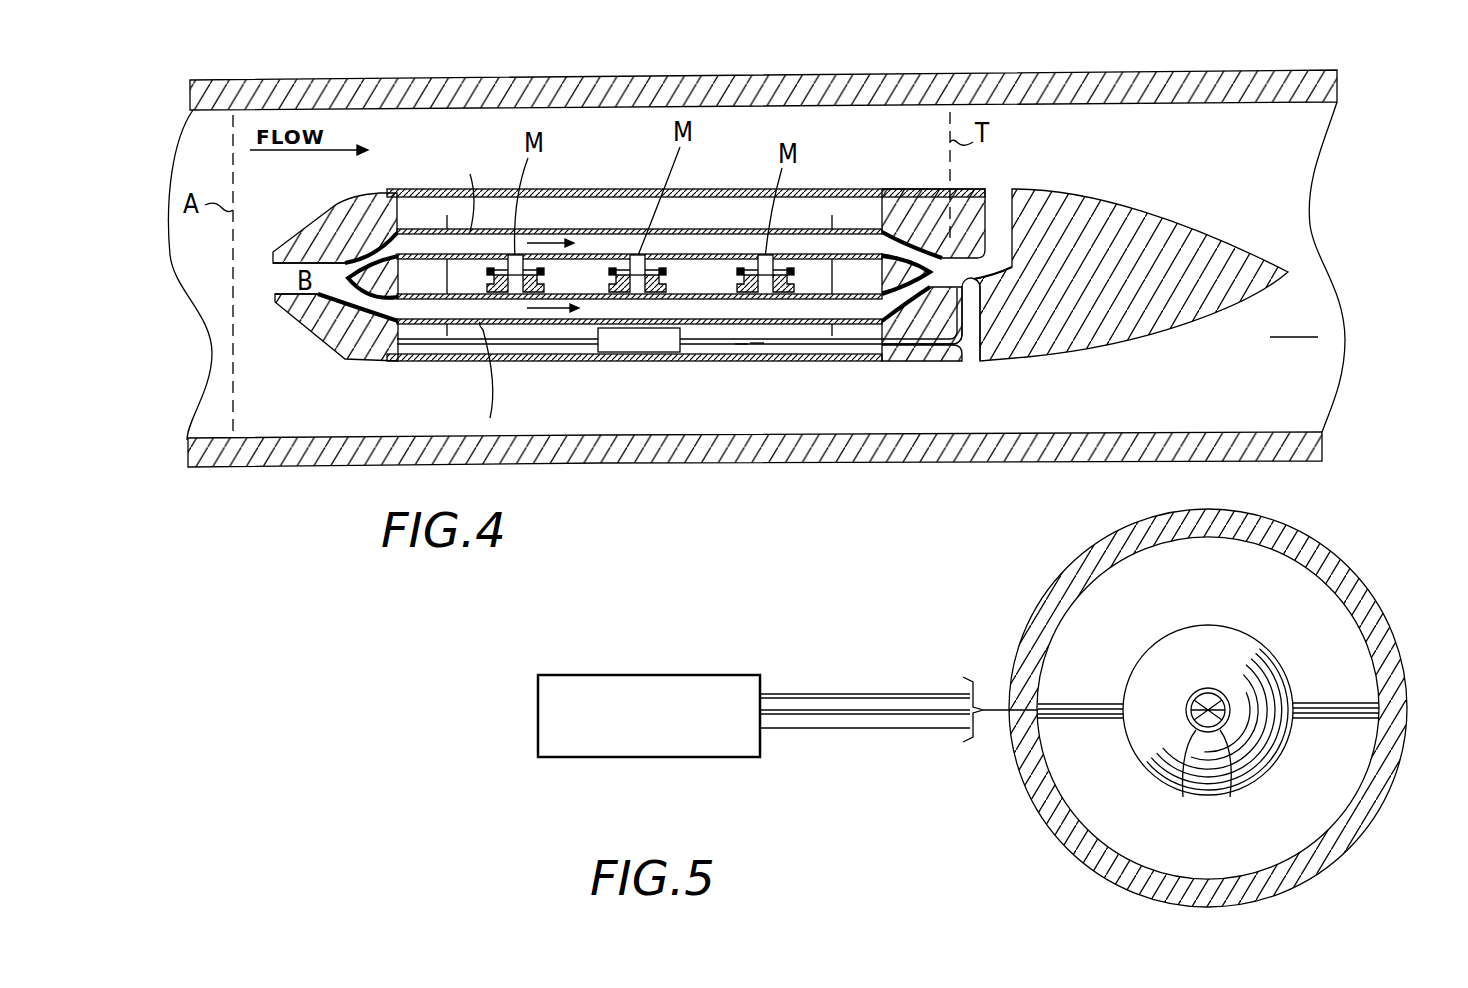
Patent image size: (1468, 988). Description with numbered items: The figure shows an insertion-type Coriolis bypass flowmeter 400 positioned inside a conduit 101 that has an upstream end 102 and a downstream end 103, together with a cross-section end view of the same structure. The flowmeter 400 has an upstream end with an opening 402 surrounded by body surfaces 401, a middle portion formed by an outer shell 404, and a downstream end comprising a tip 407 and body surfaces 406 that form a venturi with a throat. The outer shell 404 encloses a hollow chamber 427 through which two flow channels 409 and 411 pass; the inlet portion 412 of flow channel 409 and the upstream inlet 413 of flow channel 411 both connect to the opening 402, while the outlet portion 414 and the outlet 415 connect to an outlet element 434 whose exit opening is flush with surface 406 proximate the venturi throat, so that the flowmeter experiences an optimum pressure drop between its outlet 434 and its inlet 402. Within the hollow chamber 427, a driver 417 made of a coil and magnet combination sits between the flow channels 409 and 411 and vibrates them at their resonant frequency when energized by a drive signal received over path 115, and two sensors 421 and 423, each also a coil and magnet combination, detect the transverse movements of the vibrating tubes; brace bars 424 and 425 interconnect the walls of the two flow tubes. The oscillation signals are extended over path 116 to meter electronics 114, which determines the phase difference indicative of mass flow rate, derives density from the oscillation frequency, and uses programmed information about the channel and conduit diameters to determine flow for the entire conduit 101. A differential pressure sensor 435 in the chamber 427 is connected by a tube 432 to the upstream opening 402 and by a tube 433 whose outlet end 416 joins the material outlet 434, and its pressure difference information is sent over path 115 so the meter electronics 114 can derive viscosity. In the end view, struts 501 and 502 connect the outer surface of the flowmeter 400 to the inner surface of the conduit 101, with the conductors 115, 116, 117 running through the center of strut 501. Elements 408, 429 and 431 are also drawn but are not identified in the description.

In FIG. 4, the conduit 101 is at (687, 466).
In FIG. 5, the conduit 101 is at (1053, 580).
In FIG. 4, the upstream end 102 is at (201, 330).
In FIG. 4, the downstream end 103 is at (1323, 407).
In FIG. 5, the meter electronics 114 is at (538, 733).
In FIG. 5, the path 115 is at (967, 727).
In FIG. 5, the path 116 is at (860, 694).
In FIG. 5, the conductor 117 is at (865, 714).
In FIG. 4, the bypass flowmeter 400 is at (557, 176).
In FIG. 5, the bypass flowmeter 400 is at (1205, 618).
In FIG. 4, the body surfaces 401 is at (347, 333).
In FIG. 5, the body surfaces 401 is at (1185, 656).
In FIG. 4, the opening 402 is at (297, 277).
In FIG. 5, the opening 402 is at (1187, 748).
In FIG. 4, the outer shell 404 is at (815, 189).
In FIG. 4, the body surfaces 406 is at (1147, 203).
In FIG. 4, the tip 407 is at (1294, 320).
In FIG. 4, the lower inlet block 408 is at (367, 385).
In FIG. 4, the flow channel 409 is at (673, 243).
In FIG. 4, the flow channel 411 is at (690, 307).
In FIG. 4, the inlet portion 412 is at (361, 251).
In FIG. 5, the inlet portion 412 is at (1212, 697).
In FIG. 4, the upstream inlet 413 is at (338, 362).
In FIG. 5, the upstream inlet 413 is at (1230, 760).
In FIG. 4, the outlet portion 414 is at (927, 238).
In FIG. 4, the outlet 415 is at (940, 347).
In FIG. 4, the outlet end 416 is at (980, 310).
In FIG. 4, the driver 417 is at (595, 345).
In FIG. 4, the sensor 421 is at (505, 343).
In FIG. 4, the sensor 423 is at (742, 345).
In FIG. 4, the brace bar 424 is at (447, 262).
In FIG. 4, the brace bar 425 is at (832, 262).
In FIG. 4, the hollow chamber 427 is at (449, 187).
In FIG. 4, the lower casing wall 429 is at (467, 357).
In FIG. 4, the upper casing wall 431 is at (420, 189).
In FIG. 4, the tube 432 is at (470, 378).
In FIG. 4, the tube 433 is at (757, 345).
In FIG. 4, the outlet 434 is at (993, 270).
In FIG. 4, the differential pressure sensor 435 is at (668, 350).
In FIG. 5, the strut 501 is at (1080, 703).
In FIG. 5, the strut 502 is at (1337, 717).